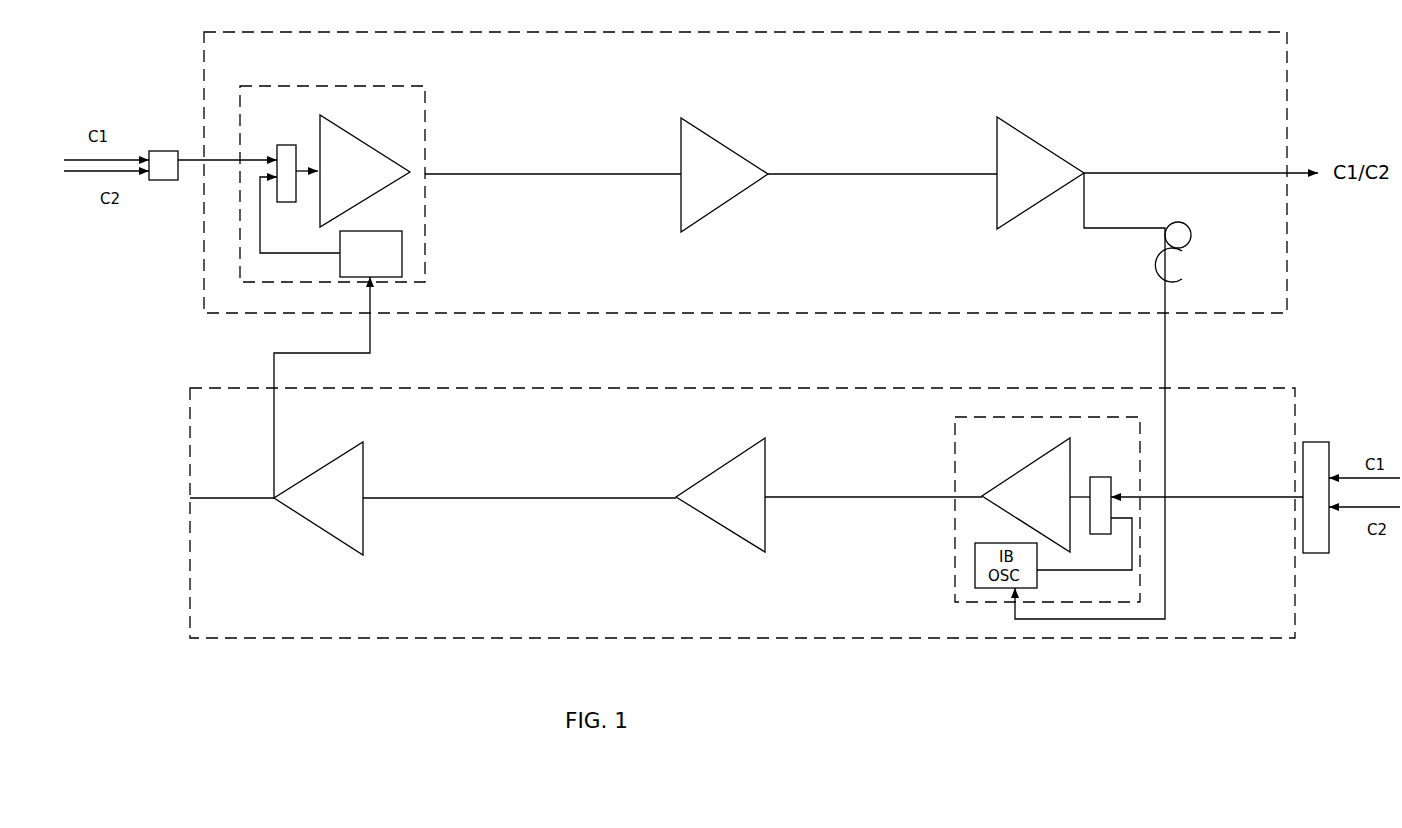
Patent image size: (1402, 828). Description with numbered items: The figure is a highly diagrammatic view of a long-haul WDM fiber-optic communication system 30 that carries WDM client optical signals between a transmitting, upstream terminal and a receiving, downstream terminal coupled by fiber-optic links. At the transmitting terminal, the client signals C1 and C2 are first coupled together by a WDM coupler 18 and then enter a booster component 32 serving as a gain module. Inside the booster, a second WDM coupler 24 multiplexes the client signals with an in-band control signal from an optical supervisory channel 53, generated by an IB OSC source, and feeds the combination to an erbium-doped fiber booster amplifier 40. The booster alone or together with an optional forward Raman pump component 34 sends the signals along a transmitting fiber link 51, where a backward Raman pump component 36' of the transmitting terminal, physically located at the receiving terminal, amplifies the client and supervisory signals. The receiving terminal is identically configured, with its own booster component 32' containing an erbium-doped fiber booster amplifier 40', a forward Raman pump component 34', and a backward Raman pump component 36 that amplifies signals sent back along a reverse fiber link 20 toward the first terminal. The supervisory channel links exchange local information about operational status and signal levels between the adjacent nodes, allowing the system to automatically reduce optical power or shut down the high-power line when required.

The WDM coupler 18 is at (177, 170).
The fiber link 20 is at (572, 492).
The WDM coupler 24 is at (290, 175).
The WDM fiber-optic communication system 30 is at (197, 345).
The booster component 32 is at (332, 184).
The booster component 32' is at (1047, 509).
The forward Raman pump component 34 is at (724, 175).
The forward Raman pump component 34' is at (720, 495).
The backward Raman pump component 36 is at (318, 498).
The backward Raman pump component 36' is at (1040, 173).
The erbium-doped fiber booster amplifier 40 is at (365, 171).
The erbium-doped fiber booster amplifier 40' is at (1026, 495).
The transmitting fiber link 51 is at (538, 175).
The in-band optical supervisory channel 53 is at (333, 253).